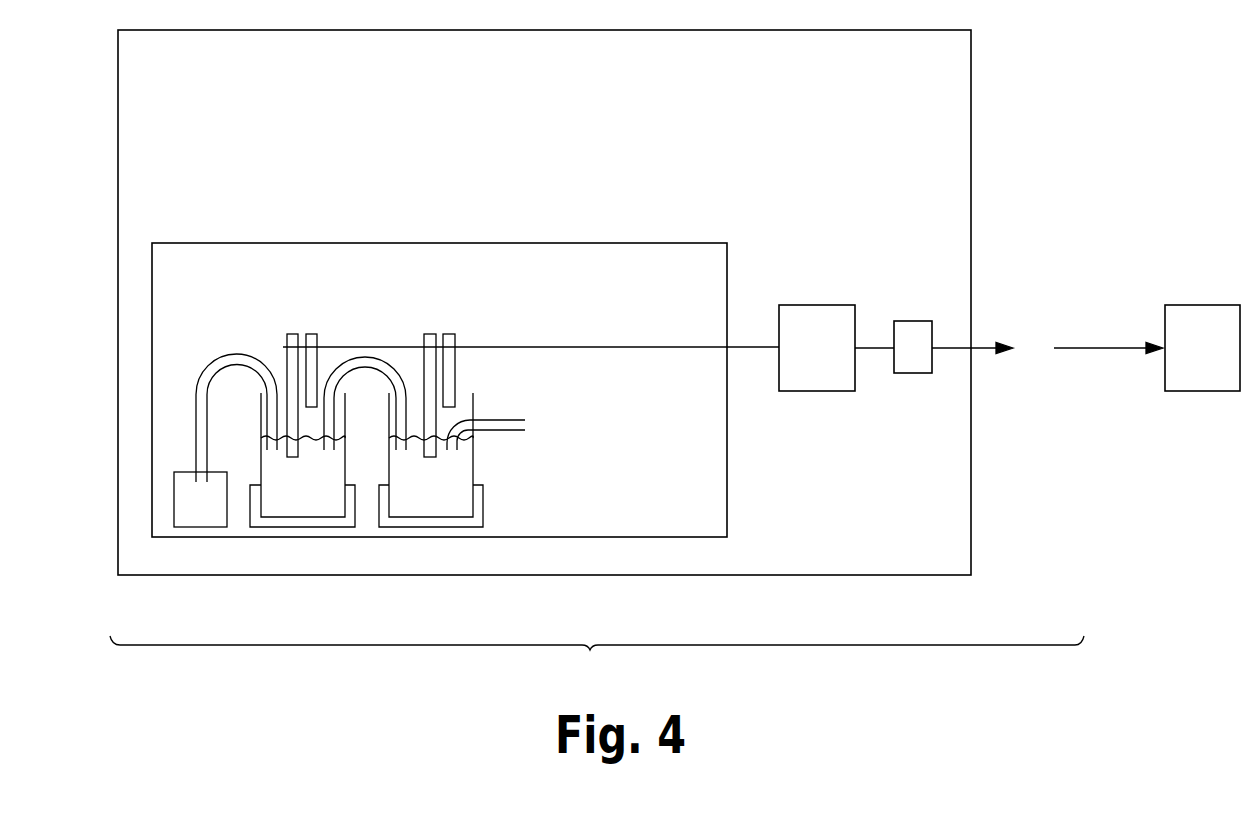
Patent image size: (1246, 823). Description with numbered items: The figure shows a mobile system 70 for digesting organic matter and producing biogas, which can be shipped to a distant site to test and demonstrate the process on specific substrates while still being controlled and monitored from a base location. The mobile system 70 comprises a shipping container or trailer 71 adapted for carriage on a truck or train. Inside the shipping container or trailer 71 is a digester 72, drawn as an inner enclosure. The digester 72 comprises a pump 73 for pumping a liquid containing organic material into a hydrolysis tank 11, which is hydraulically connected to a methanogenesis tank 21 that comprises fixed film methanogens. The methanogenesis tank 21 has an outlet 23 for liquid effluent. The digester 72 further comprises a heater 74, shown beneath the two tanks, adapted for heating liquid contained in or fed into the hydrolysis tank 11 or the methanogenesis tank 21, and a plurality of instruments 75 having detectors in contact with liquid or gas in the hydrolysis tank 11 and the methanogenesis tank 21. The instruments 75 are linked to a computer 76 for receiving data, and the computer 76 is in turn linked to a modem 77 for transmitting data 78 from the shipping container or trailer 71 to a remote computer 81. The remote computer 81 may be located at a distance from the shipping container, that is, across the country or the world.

The hydrolysis tank 11 is at (307, 502).
The methanogenesis tank 21 is at (437, 502).
The outlet 23 is at (500, 432).
The mobile system 70 is at (597, 660).
The shipping container or trailer 71 is at (308, 576).
The digester 72 is at (152, 418).
The pump 73 is at (187, 497).
The heater 74 is at (355, 526).
The instruments 75 is at (445, 334).
The computer 76 is at (827, 361).
The modem 77 is at (925, 361).
The data 78 is at (1047, 348).
The remote computer 81 is at (1212, 380).